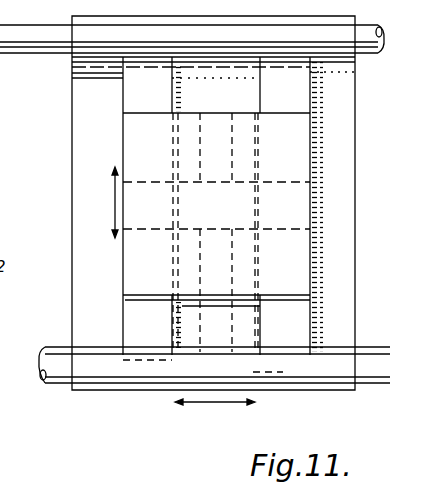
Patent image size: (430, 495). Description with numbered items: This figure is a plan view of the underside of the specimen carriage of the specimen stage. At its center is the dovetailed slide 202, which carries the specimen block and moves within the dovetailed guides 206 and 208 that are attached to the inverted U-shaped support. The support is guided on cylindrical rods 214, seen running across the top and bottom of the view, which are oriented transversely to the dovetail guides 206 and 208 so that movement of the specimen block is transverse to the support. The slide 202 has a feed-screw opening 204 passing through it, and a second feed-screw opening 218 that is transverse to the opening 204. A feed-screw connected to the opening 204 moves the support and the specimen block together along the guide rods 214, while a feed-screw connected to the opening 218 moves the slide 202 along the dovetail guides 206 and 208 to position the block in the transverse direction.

The dovetailed slide 202 is at (138, 130).
The feed-screw opening 204 is at (142, 185).
The dovetailed guide 206 is at (293, 337).
The dovetailed guide 208 is at (145, 338).
The cylindrical rods 214 is at (32, 42).
The feed-screw opening 218 is at (230, 135).